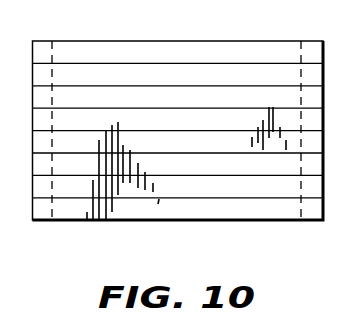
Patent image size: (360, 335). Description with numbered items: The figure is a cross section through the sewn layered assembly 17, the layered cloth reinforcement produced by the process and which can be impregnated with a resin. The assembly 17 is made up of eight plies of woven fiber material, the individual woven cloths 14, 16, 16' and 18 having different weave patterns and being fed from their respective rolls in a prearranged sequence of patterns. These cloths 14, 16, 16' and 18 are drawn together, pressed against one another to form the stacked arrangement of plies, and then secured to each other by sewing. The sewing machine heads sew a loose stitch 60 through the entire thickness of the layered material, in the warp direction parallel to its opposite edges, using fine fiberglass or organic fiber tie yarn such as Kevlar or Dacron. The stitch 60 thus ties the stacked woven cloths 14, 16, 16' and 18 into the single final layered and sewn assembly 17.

The woven cloth 14 is at (67, 44).
The woven cloth 16 is at (178, 131).
The woven cloth 16' is at (178, 131).
The sewn layered assembly 17 is at (176, 17).
The woven cloth 18 is at (227, 118).
The loose stitch 60 is at (298, 53).